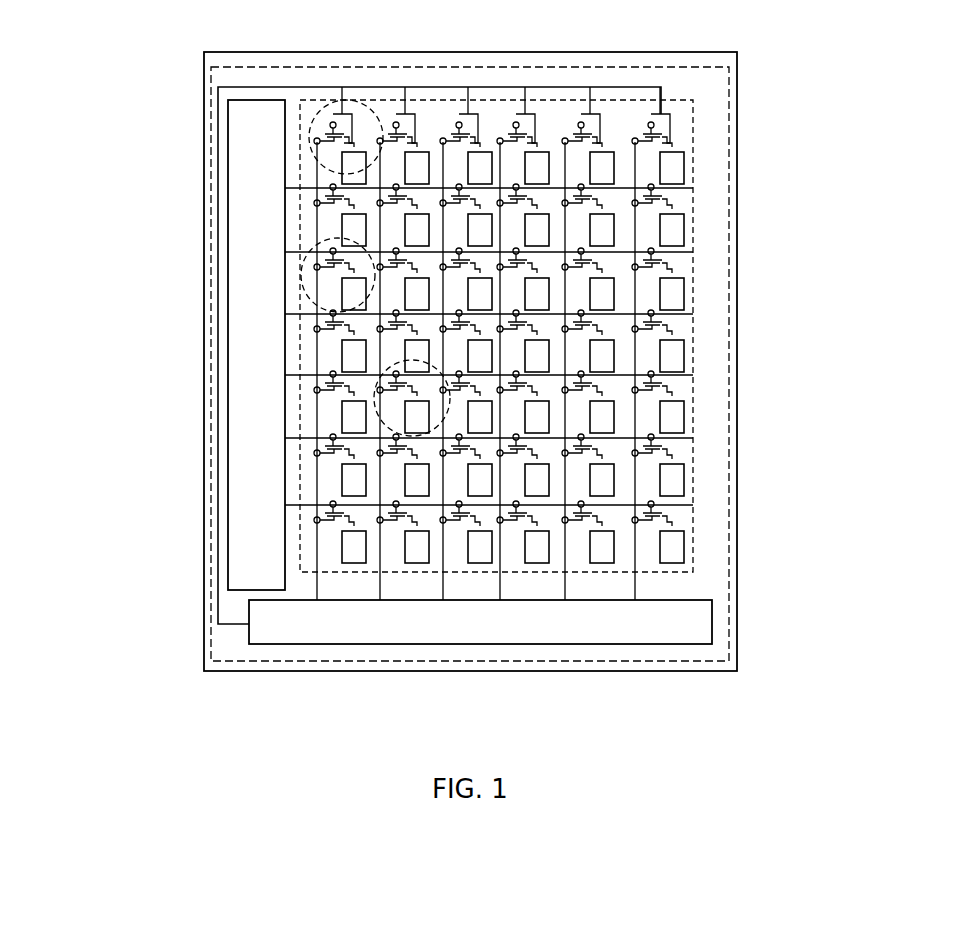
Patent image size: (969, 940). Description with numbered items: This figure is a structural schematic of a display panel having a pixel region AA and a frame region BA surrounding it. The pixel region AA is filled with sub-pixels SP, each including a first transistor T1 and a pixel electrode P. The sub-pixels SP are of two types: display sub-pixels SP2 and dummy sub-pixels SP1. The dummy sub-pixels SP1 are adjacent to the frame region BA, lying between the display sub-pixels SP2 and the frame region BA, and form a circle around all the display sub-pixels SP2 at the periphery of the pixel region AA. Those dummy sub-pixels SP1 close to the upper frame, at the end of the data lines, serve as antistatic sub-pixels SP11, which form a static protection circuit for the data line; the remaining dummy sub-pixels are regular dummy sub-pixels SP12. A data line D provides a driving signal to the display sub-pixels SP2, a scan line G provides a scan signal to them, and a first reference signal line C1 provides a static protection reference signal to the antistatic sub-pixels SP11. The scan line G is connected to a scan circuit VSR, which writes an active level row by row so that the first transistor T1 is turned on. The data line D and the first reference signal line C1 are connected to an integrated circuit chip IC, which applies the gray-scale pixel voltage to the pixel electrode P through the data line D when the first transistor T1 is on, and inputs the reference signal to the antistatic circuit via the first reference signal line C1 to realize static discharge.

The frame region BA is at (712, 77).
The pixel region AA is at (443, 110).
The scan circuit VSR is at (256, 345).
The integrated circuit chip IC is at (480, 622).
The first reference signal line C1 is at (688, 103).
The scan line G is at (623, 505).
The data line D is at (567, 588).
The first transistor T1 is at (668, 194).
The pixel electrode P is at (605, 403).
The sub-pixel SP is at (245, 268).
The dummy sub-pixel SP1 is at (235, 208).
The antistatic sub-pixel SP11 is at (303, 128).
The regular dummy sub-pixel SP12 is at (303, 262).
The display sub-pixel SP2 is at (392, 379).